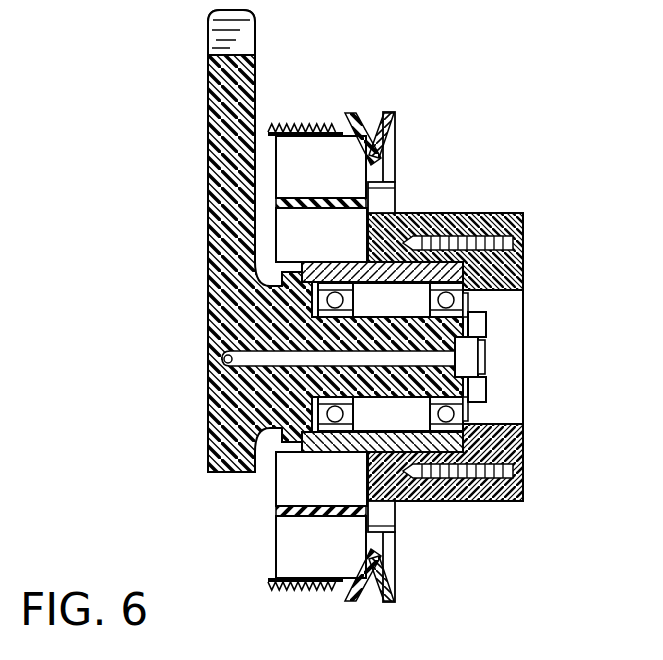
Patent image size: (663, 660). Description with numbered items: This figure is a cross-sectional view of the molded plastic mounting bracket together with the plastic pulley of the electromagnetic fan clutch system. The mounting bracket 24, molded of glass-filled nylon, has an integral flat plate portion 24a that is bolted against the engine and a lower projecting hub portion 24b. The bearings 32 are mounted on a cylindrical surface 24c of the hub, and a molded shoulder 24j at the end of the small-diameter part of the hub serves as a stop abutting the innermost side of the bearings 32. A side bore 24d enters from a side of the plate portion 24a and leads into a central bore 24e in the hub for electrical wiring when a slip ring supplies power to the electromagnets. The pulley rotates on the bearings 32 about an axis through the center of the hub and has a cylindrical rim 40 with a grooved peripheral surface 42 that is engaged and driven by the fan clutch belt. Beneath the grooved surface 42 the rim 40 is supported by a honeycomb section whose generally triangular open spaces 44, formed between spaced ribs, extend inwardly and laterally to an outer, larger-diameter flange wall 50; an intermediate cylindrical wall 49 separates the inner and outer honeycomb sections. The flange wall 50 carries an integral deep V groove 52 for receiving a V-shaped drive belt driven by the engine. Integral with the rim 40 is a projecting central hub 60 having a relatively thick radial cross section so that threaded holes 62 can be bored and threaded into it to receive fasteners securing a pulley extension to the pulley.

The mounting bracket 24 is at (246, 72).
The flat plate portion 24a is at (208, 129).
The hub portion 24b is at (487, 332).
The cylindrical surface of the hub 24c is at (374, 316).
The side bore 24d is at (222, 360).
The central bore 24e is at (427, 360).
The molded shoulder 24j is at (470, 407).
The bearings 32 is at (443, 283).
The rim 40 is at (320, 122).
The grooved peripheral surface 42 is at (285, 127).
The open spaces 44 is at (297, 491).
The intermediate cylindrical wall 49 is at (300, 198).
The outer flange wall 50 is at (377, 166).
The V groove 52 is at (368, 140).
The projecting hub 60 is at (488, 214).
The threaded holes 62 is at (510, 247).